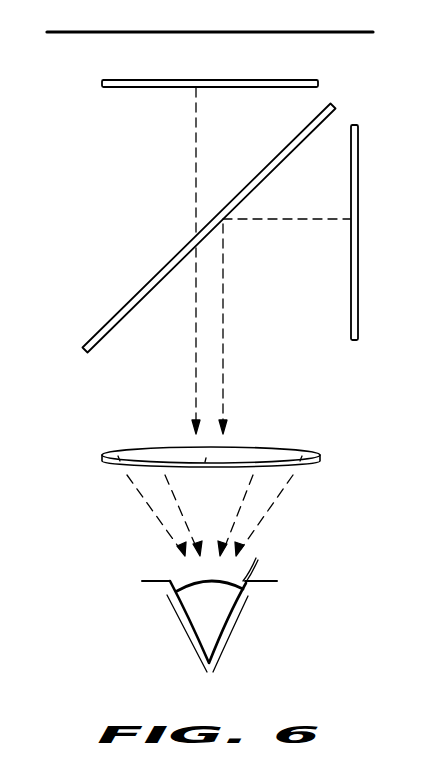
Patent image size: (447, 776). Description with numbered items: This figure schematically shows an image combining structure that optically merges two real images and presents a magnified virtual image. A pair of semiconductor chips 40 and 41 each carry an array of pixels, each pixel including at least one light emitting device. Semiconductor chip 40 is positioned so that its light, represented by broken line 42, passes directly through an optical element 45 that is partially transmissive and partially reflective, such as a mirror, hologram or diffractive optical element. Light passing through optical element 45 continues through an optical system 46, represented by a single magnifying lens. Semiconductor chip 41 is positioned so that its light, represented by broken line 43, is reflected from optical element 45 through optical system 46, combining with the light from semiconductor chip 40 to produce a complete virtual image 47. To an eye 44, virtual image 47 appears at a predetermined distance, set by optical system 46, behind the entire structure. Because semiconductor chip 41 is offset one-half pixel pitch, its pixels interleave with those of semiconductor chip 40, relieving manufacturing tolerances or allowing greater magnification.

The semiconductor chip 40 is at (232, 88).
The semiconductor chip 41 is at (350, 313).
The broken line 42 is at (196, 158).
The broken line 43 is at (250, 220).
The eye 44 is at (172, 637).
The optical element 45 is at (148, 283).
The optical system 46 is at (290, 450).
The virtual image 47 is at (102, 34).